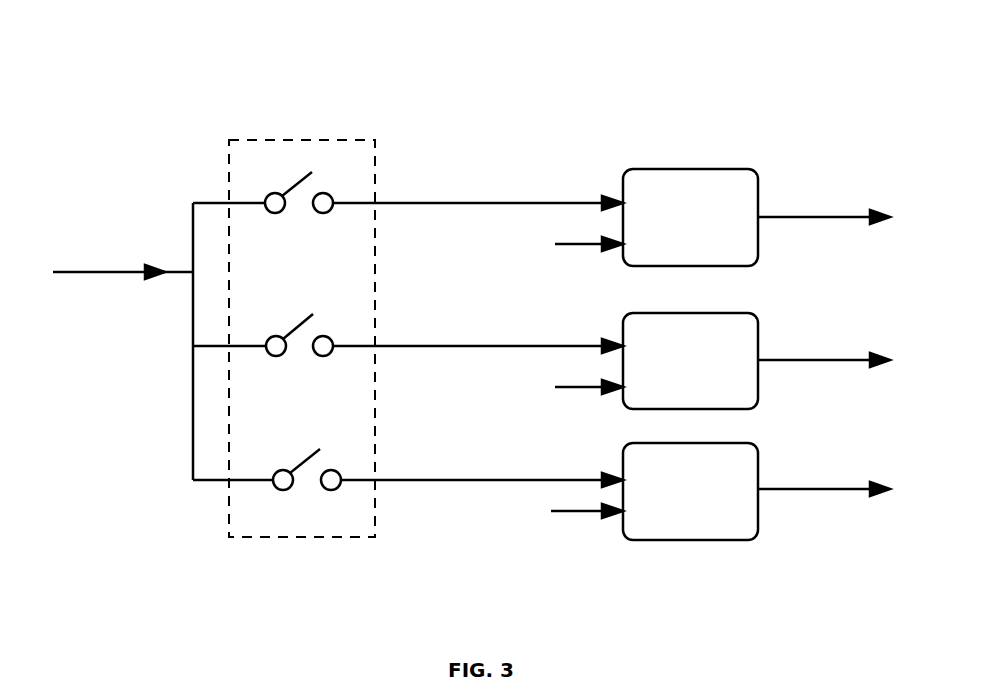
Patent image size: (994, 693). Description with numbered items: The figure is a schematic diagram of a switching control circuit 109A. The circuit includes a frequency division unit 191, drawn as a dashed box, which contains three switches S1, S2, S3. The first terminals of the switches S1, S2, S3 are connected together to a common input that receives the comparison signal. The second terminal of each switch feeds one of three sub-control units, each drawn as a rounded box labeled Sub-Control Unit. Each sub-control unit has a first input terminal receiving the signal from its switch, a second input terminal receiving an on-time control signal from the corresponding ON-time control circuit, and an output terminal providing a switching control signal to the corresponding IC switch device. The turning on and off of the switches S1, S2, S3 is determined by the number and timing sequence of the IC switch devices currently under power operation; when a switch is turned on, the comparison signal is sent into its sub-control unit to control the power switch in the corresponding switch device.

The switching control circuit 109A is at (533, 103).
The frequency division unit 191 is at (260, 537).
The switch S1 is at (299, 181).
The switch S2 is at (299, 322).
The switch S3 is at (307, 458).